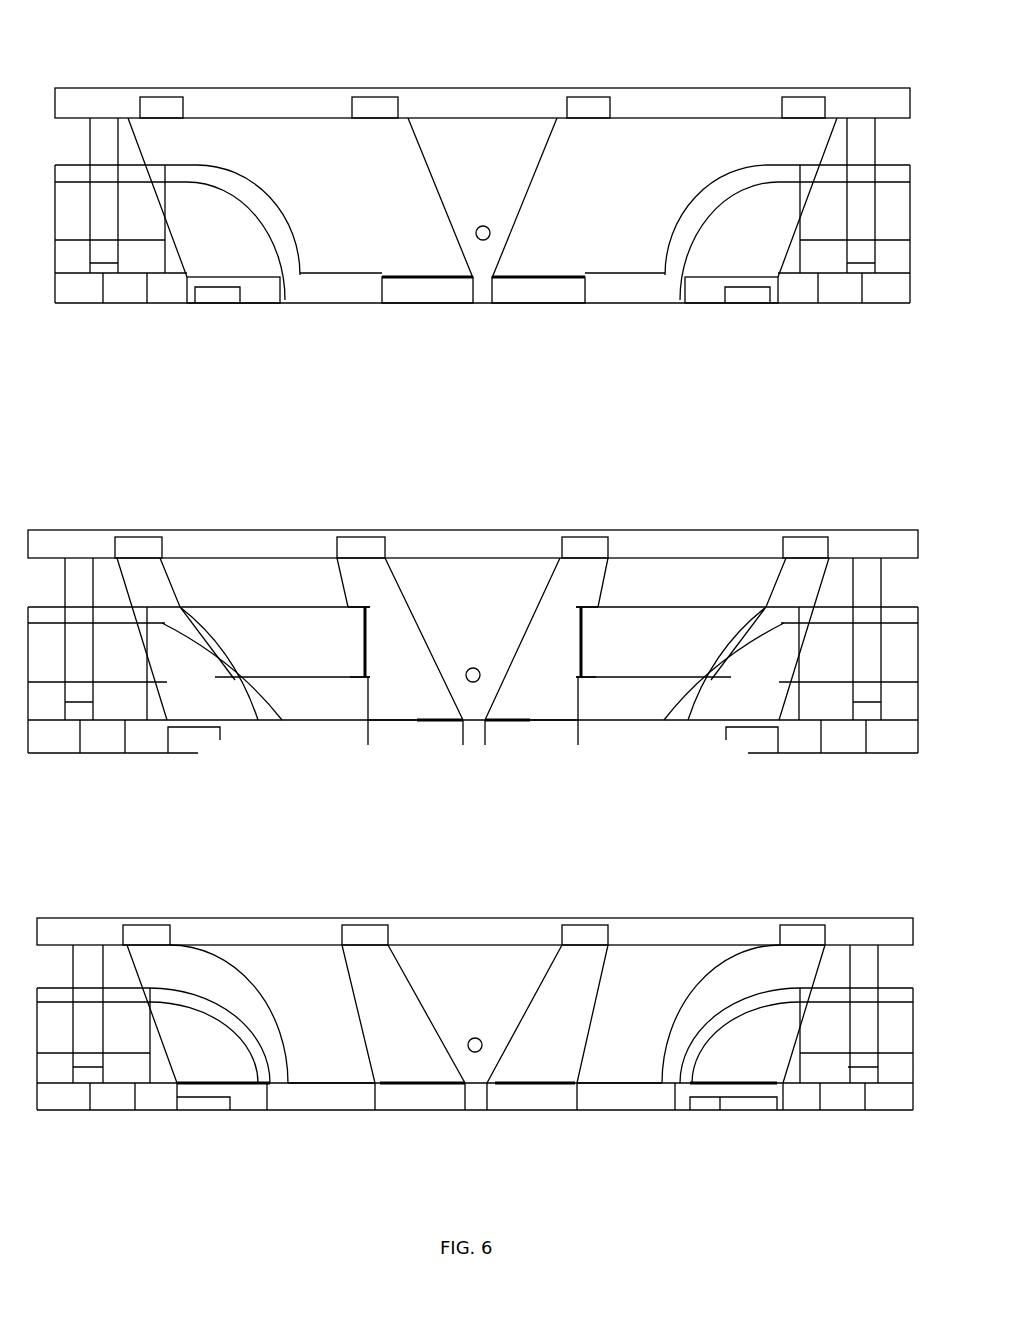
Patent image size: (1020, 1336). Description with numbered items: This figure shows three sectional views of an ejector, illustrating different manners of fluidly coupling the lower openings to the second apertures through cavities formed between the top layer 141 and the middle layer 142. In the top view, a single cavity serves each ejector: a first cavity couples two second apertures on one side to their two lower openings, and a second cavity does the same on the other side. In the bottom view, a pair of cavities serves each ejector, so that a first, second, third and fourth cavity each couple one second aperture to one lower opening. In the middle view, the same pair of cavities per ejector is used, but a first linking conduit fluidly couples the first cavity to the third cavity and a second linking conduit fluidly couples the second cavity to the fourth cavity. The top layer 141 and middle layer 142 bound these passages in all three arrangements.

The top layer 141 is at (908, 916).
The middle layer 142 is at (922, 1010).